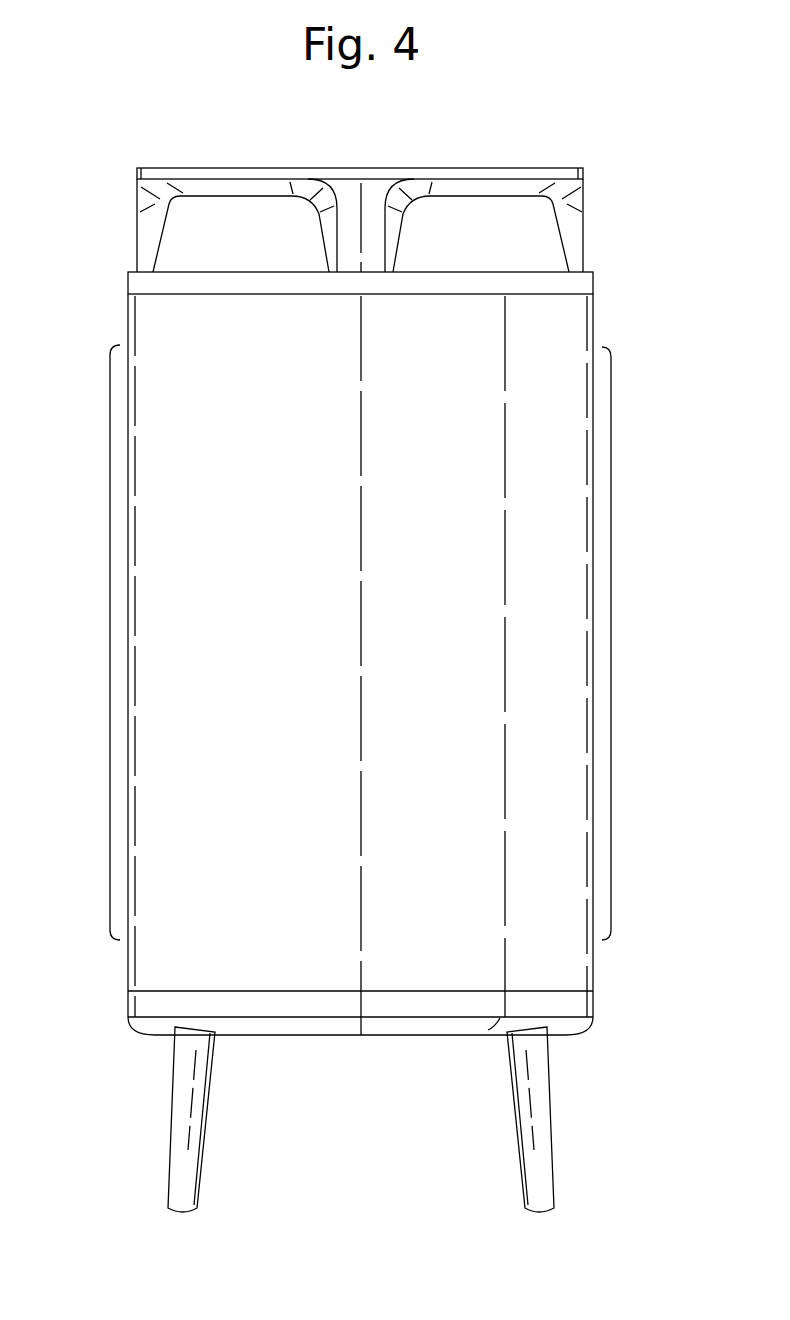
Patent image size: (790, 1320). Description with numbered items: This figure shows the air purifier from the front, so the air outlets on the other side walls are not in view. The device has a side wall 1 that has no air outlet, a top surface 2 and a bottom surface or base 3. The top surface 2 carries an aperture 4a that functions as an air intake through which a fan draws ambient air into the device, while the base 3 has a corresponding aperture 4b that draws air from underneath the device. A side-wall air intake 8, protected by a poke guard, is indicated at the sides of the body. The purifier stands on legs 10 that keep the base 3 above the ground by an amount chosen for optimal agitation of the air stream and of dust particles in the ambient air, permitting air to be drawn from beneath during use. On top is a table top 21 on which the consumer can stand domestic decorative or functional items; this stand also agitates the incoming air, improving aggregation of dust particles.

The side wall 1 is at (527, 950).
The top surface 2 is at (593, 280).
The bottom surface 3 is at (128, 1003).
The aperture 4a is at (208, 268).
The aperture 4b is at (335, 1037).
The air intake 8 is at (110, 648).
The legs 10 is at (170, 1140).
The table top 21 is at (583, 173).